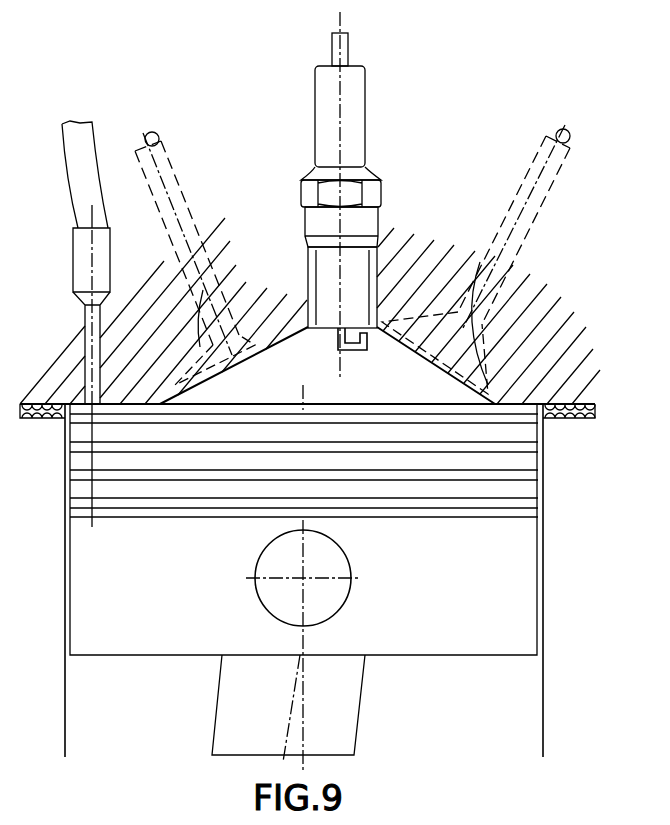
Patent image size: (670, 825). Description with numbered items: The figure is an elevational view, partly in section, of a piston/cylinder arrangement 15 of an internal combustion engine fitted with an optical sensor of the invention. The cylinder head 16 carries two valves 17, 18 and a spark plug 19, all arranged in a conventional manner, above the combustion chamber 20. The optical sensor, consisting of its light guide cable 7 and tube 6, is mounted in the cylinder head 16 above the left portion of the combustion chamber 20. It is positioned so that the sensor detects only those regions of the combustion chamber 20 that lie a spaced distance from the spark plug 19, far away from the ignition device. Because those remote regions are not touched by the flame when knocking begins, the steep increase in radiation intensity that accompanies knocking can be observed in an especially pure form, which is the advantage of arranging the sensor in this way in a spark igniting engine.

The tube 6 is at (88, 380).
The light guide cable 7 is at (78, 158).
The piston/cylinder arrangement 15 is at (545, 562).
The cylinder head 16 is at (525, 272).
The valve 17 is at (168, 180).
The valve 18 is at (531, 172).
The spark plug 19 is at (352, 127).
The combustion chamber 20 is at (110, 410).